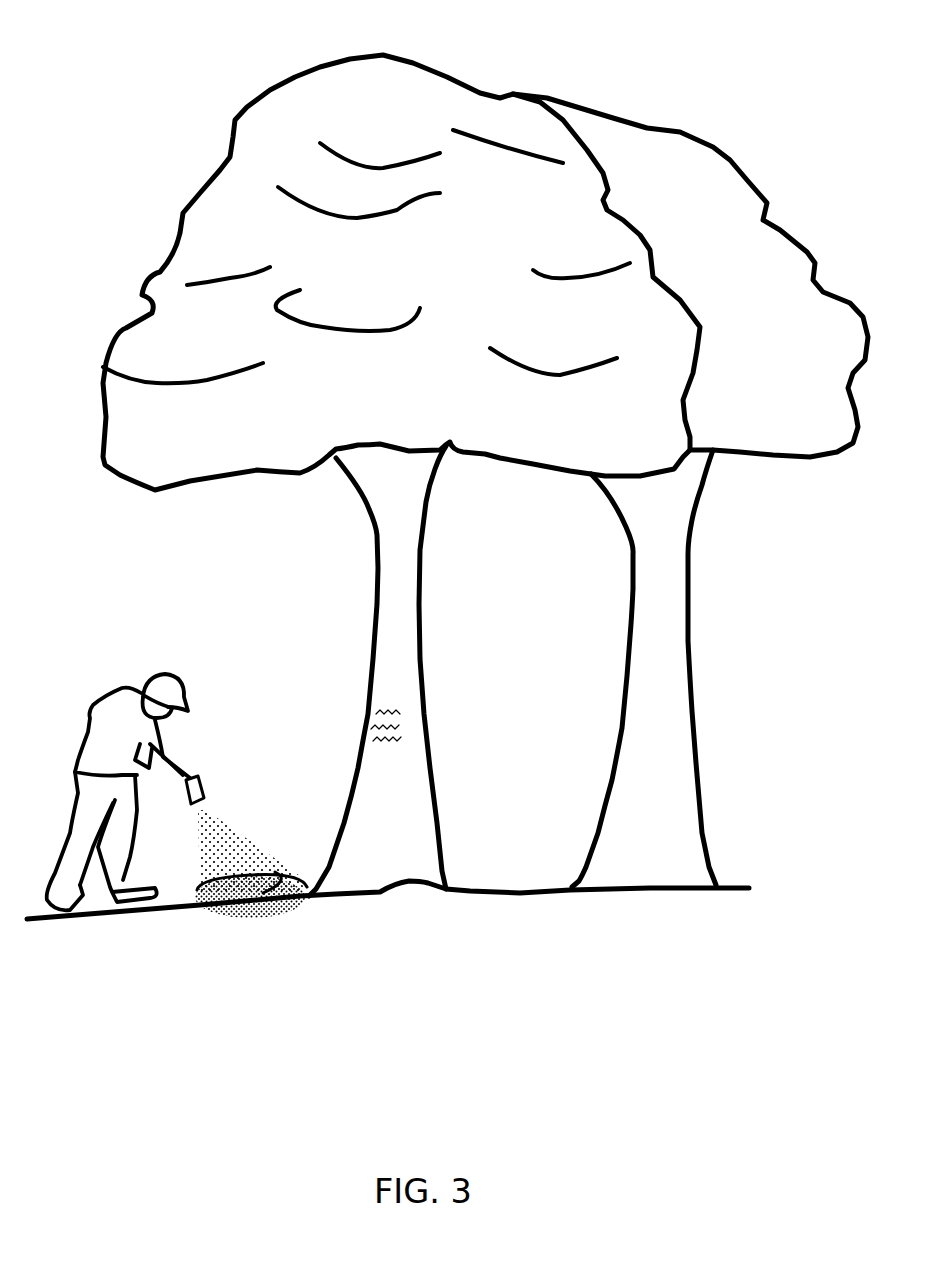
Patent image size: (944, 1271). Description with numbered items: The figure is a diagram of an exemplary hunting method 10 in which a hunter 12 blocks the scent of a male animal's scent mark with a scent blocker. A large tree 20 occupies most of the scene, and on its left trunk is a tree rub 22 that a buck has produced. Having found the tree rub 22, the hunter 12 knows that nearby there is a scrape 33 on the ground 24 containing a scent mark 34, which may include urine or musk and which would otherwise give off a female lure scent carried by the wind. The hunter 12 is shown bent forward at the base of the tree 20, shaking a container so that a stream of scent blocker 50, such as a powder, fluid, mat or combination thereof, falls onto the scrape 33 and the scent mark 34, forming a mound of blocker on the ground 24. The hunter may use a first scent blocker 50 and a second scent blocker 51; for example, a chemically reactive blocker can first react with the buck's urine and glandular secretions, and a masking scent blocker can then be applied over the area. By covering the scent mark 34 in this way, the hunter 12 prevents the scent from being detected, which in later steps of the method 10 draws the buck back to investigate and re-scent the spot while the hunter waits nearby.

The hunting method 10 is at (138, 587).
The hunter 12 is at (123, 723).
The tree 20 is at (270, 125).
The tree rub 22 is at (395, 716).
The ground 24 is at (197, 893).
The scrape 33 is at (243, 910).
The scent mark 34 is at (293, 908).
The scent blocker 50 is at (213, 833).
The second scent blocker 51 is at (290, 870).